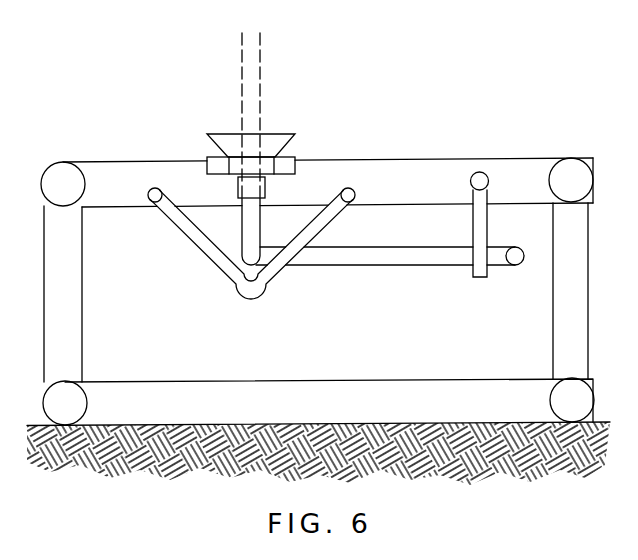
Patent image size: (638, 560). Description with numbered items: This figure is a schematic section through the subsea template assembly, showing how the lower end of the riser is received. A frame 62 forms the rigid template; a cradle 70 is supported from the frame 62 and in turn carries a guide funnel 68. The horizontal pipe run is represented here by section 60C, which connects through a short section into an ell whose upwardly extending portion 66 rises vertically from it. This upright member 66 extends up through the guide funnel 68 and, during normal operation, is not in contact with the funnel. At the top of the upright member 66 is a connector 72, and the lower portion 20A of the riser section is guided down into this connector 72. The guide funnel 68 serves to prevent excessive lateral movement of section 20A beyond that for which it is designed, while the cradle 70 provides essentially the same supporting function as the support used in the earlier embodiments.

The lower portion of section 20 20A is at (260, 77).
The frame 62 is at (418, 163).
The guide funnel 68 is at (282, 135).
The connector 72 is at (262, 187).
The upwardly extending portion 66 is at (247, 240).
The cradle 70 is at (255, 292).
The section 60C is at (395, 261).